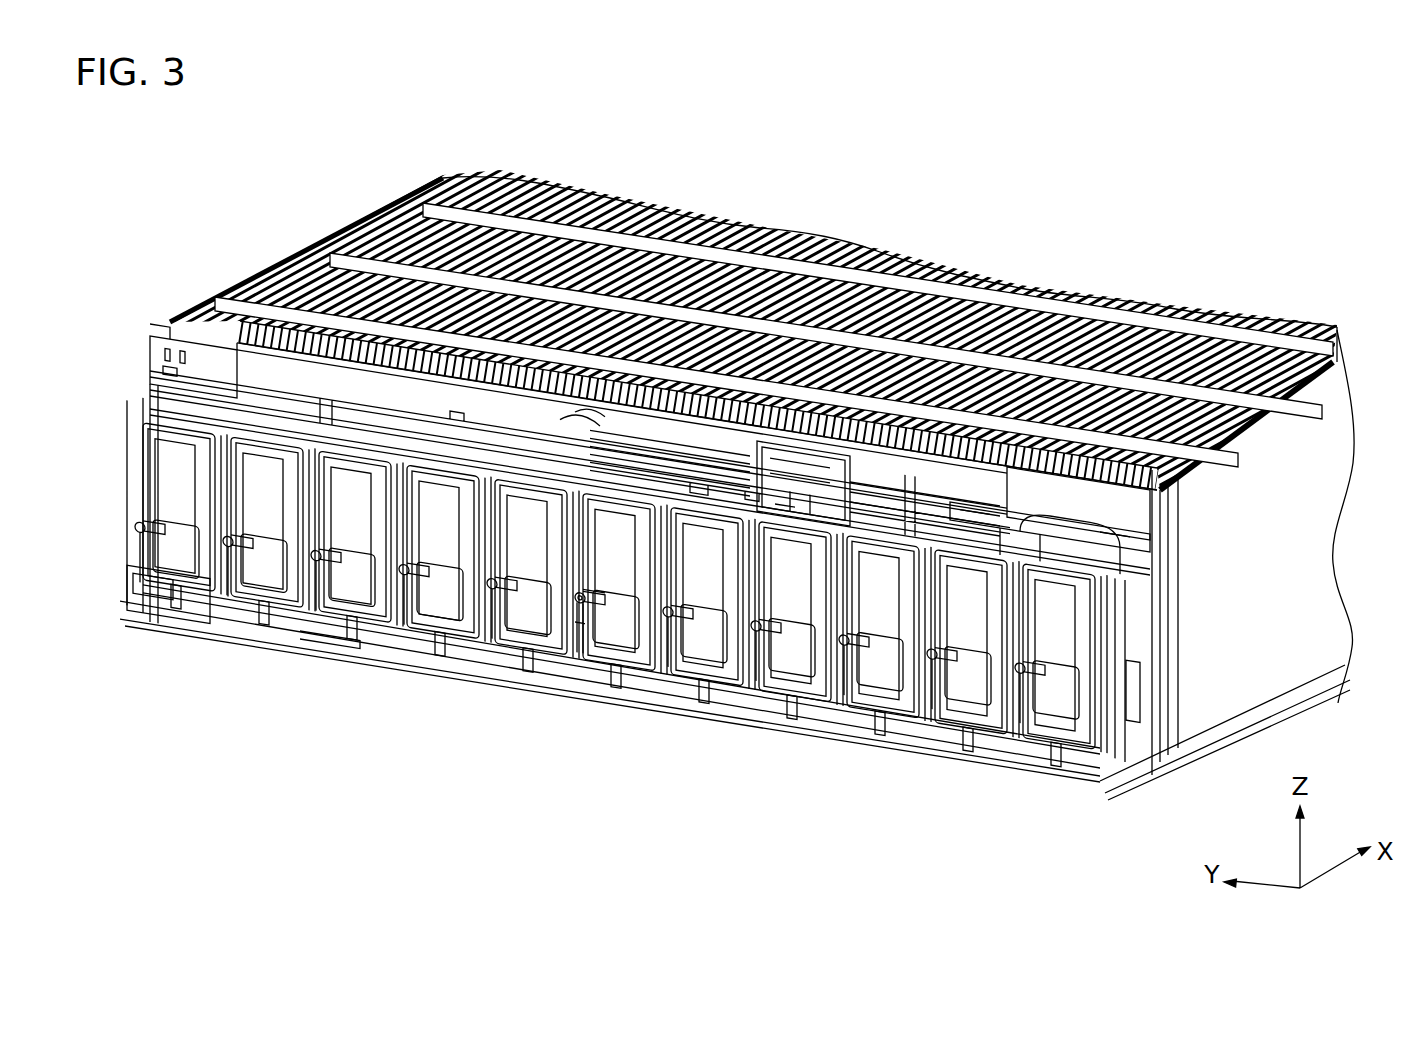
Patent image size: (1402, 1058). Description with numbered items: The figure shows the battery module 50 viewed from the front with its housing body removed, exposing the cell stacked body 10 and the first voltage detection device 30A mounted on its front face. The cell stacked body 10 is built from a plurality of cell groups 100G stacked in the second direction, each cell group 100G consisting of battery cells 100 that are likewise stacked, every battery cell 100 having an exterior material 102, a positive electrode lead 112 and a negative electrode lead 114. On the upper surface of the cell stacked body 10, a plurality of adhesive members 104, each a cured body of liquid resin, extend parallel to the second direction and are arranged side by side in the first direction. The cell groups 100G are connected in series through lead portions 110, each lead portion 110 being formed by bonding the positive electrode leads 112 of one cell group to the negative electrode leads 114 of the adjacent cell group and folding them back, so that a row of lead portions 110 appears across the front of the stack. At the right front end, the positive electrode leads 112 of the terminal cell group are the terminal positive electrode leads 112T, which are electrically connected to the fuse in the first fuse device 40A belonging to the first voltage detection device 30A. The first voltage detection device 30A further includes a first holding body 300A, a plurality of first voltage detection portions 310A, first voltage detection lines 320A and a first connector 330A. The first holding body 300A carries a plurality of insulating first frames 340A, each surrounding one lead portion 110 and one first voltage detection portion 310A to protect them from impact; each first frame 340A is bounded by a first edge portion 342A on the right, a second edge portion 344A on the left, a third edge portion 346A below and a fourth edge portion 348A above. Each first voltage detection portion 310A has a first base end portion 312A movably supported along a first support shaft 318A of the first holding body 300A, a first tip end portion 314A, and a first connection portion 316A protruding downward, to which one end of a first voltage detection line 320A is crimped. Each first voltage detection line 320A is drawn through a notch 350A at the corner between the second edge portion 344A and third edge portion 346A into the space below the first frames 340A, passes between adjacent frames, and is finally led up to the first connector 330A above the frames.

The cell stacked body 10 is at (327, 222).
The first voltage detection device 30A is at (160, 328).
The first fuse device 40A is at (1070, 490).
The battery module 50 is at (1222, 138).
The cell group 100G is at (850, 290).
The battery cell 100 is at (890, 251).
The exterior material 102 is at (648, 393).
The adhesive member 104 is at (985, 365).
The lead portion 110 is at (977, 838).
The positive electrode lead 112 is at (870, 612).
The negative electrode lead 114 is at (882, 612).
The terminal positive electrode lead 112T is at (1133, 690).
The first holding body 300A is at (268, 428).
The first voltage detection portion 310A is at (745, 805).
The first base end portion 312A is at (610, 620).
The first tip end portion 314A is at (622, 655).
The first connection portion 316A is at (571, 642).
The first support shaft 318A is at (572, 598).
The first voltage detection line 320A is at (573, 660).
The first connector 330A is at (570, 378).
The first frame 340A is at (490, 530).
The first edge portion 342A is at (470, 522).
The second edge portion 344A is at (410, 513).
The fourth edge portion 348A is at (447, 470).
The third edge portion 346A is at (425, 605).
The notch 350A is at (352, 625).